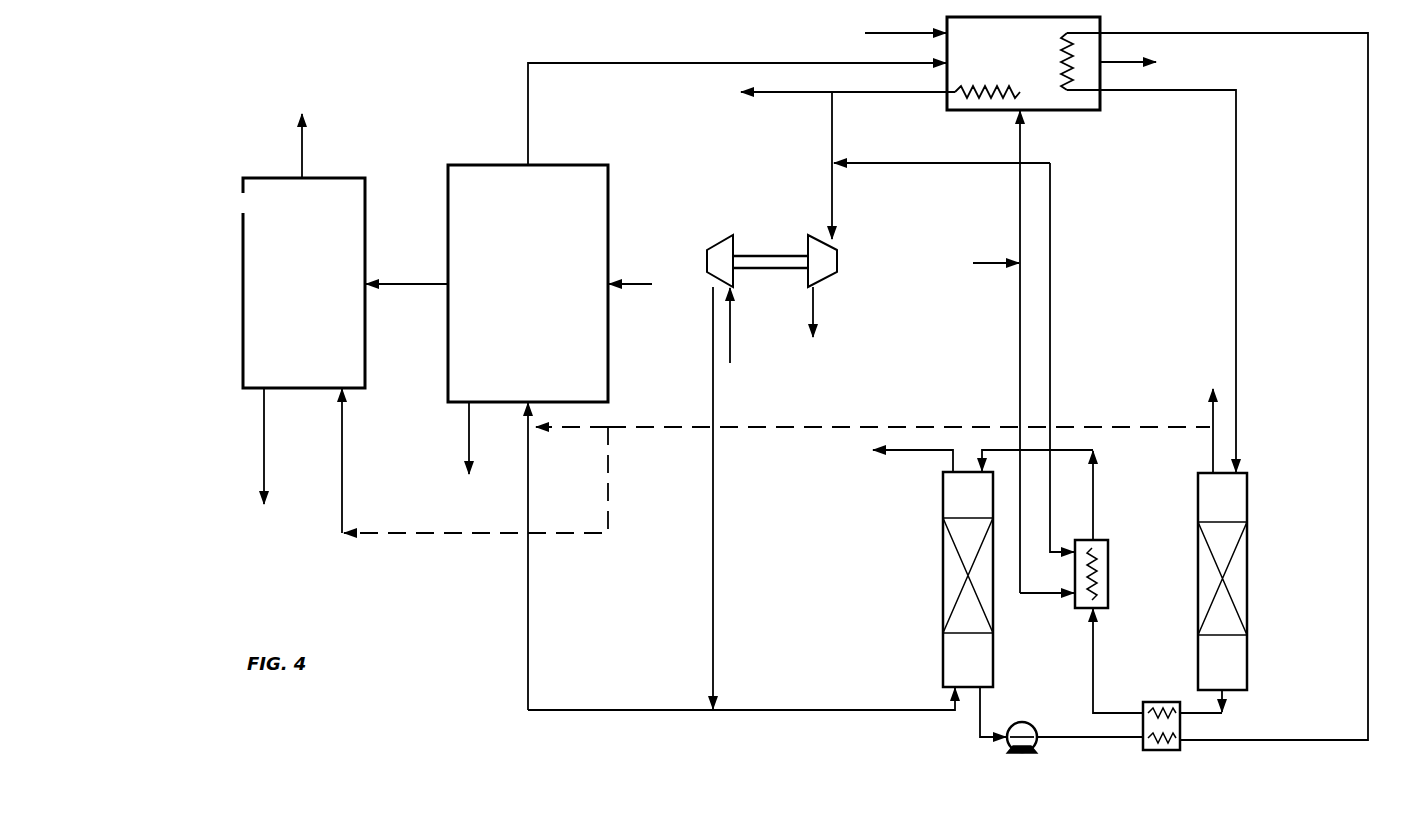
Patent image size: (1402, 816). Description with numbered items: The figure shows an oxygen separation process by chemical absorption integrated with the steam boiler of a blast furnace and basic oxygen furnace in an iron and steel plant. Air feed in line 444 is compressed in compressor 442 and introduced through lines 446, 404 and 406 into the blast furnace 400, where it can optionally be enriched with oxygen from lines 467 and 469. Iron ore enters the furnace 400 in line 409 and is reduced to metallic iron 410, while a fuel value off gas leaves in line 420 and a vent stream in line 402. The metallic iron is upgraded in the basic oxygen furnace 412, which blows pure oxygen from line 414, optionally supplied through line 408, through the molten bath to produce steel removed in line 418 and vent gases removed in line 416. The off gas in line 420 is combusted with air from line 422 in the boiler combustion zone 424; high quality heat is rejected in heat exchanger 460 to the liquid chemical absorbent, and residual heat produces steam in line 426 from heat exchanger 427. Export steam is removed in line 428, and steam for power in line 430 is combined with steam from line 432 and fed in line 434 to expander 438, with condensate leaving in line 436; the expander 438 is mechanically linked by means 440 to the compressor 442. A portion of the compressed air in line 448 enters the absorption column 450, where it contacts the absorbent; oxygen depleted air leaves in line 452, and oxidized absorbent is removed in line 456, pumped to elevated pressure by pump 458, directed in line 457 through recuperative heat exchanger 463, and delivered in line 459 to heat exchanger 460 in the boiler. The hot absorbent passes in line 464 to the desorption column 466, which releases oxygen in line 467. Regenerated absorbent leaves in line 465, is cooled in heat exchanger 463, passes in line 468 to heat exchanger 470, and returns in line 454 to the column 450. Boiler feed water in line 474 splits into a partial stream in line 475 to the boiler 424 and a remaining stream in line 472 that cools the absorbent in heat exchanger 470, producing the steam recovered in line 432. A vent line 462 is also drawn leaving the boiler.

The blast furnace 400 is at (545, 362).
The vent stream line 402 is at (468, 447).
The compressed air line 404 is at (528, 590).
The compressed air line 406 is at (529, 409).
The oxygen line 408 is at (566, 535).
The iron ore line 409 is at (647, 285).
The metallic iron 410 is at (438, 284).
The basic oxygen furnace 412 is at (320, 362).
The oxygen line 414 is at (343, 441).
The vent gas line 416 is at (304, 151).
The steel product line 418 is at (265, 441).
The off gas line 420 is at (765, 63).
The air line 422 is at (929, 33).
The boiler combustion zone 424 is at (1040, 86).
The steam line 426 is at (904, 94).
The heat exchanger 427 is at (986, 111).
The export steam line 428 is at (778, 95).
The power steam line 430 is at (832, 128).
The steam recovery line 432 is at (1040, 266).
The combined steam line 434 is at (833, 212).
The steam condensate line 436 is at (815, 303).
The expander 438 is at (830, 275).
The mechanical linkage 440 is at (776, 271).
The compressor 442 is at (724, 246).
The air feed line 444 is at (748, 316).
The compressed air line 446 is at (714, 470).
The air line to absorption column 448 is at (795, 712).
The chemical absorption column 450 is at (943, 527).
The oxygen depleted air line 452 is at (920, 455).
The cooled absorbent return line 454 is at (1096, 523).
The oxidized absorbent line 456 is at (975, 733).
The pressurized absorbent line 457 is at (1098, 740).
The pump 458 is at (1013, 722).
The preheated absorbent line 459 is at (1368, 283).
The heat exchanger 460 is at (1067, 33).
The vent line 462 is at (1125, 66).
The recuperative heat exchanger 463 is at (1148, 700).
The high temperature absorbent line 464 is at (1230, 279).
The regenerated absorbent line 465 is at (1216, 721).
The desorption column 466 is at (1250, 516).
The oxygen line 467 is at (1206, 452).
The absorbent line 468 is at (1093, 673).
The oxygen enrichment line 469 is at (881, 427).
The heat exchanger 470 is at (1110, 576).
The boiler feed water line 472 is at (1018, 395).
The boiler feed water line 474 is at (983, 259).
The partial boiler feed water line 475 is at (1026, 138).